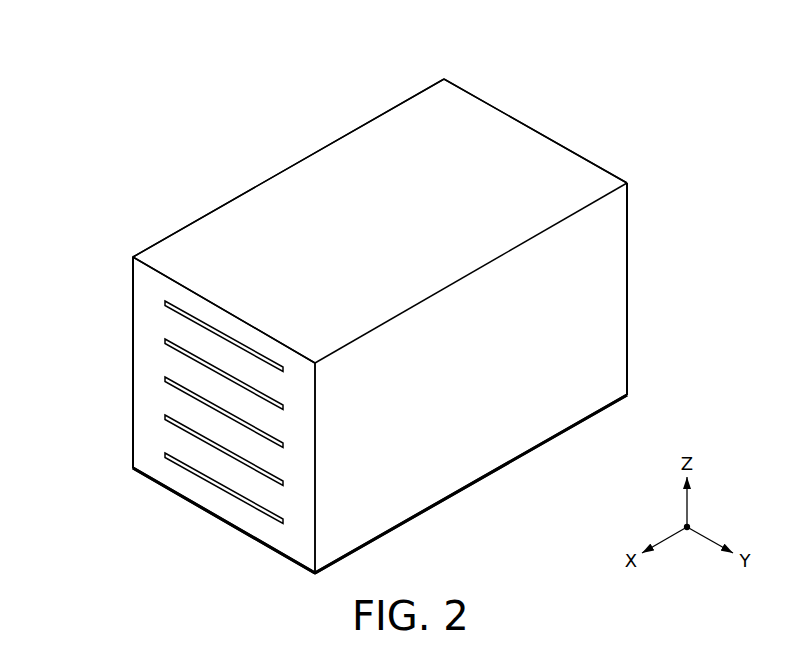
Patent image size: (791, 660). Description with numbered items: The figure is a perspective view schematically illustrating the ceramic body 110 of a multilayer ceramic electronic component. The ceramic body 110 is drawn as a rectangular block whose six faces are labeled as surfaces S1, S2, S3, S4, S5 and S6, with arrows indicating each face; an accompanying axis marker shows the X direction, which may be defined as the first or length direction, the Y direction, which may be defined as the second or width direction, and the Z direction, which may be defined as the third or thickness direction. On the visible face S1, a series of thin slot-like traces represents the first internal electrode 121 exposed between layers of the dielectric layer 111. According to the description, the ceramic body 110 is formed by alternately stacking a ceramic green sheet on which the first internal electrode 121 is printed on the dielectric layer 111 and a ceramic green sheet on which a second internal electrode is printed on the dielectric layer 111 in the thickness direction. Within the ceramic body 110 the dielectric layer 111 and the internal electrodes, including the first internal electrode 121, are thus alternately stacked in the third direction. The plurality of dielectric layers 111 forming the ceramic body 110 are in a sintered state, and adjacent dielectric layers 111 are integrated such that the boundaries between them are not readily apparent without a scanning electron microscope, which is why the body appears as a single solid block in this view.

The ceramic body 110 is at (221, 30).
The dielectric layer 111 is at (143, 387).
The first internal electrode 121 is at (183, 353).
The first surface (slotted front face) S1 is at (215, 460).
The second surface (rear face) S2 is at (532, 160).
The third surface (right side face) S3 is at (555, 387).
The fourth surface (left side face) S4 is at (242, 225).
The fifth surface (top face) S5 is at (411, 137).
The sixth surface (bottom face) S6 is at (441, 468).